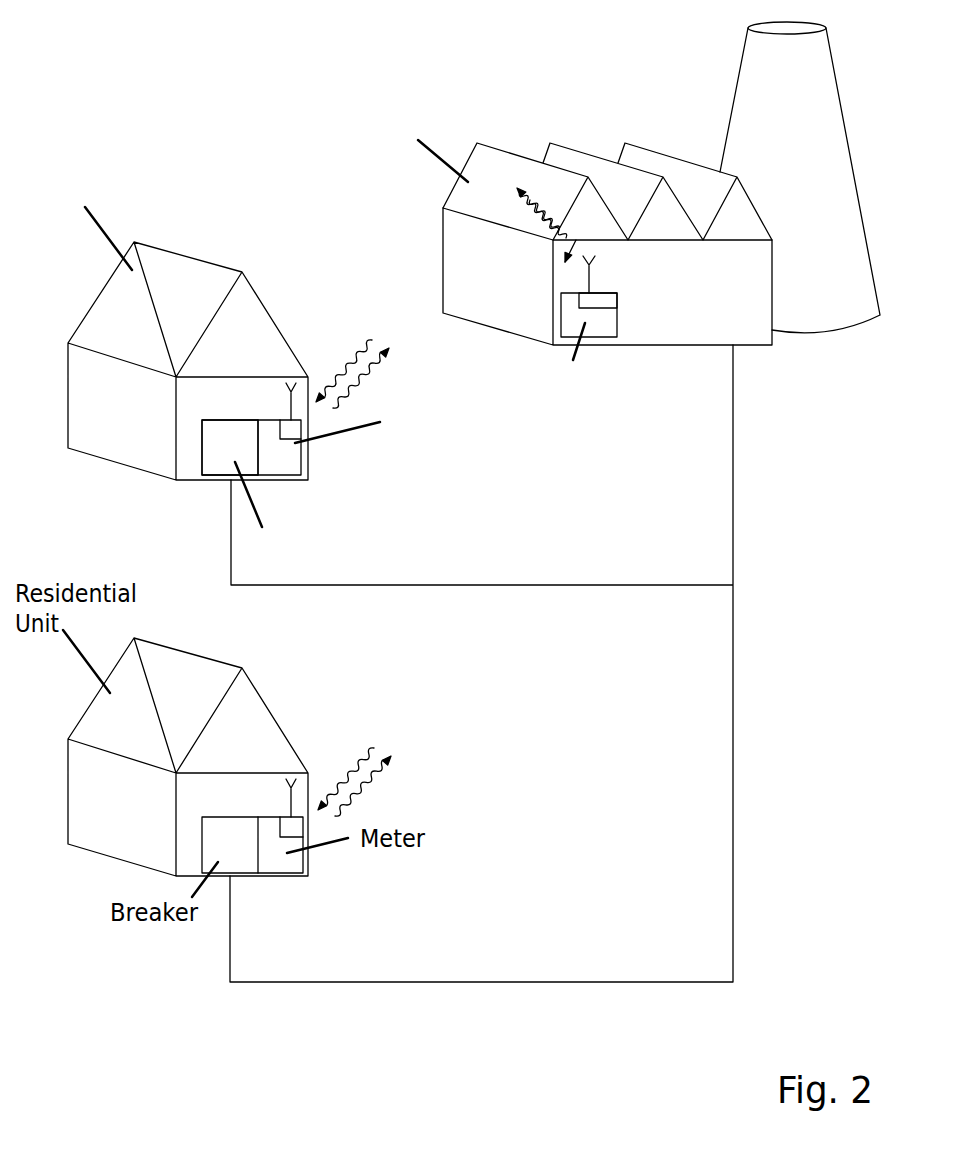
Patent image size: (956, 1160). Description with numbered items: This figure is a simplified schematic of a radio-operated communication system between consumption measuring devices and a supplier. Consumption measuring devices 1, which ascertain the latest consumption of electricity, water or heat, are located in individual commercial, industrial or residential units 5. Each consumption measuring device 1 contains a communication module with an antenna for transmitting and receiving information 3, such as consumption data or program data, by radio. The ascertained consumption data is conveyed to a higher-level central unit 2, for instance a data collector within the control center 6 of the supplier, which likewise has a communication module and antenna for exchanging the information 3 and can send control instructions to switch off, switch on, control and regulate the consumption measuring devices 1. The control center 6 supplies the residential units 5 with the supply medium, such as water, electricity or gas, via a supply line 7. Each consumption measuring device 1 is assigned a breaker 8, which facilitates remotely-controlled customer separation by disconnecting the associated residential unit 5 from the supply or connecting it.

The consumption measuring device 1 is at (305, 455).
The central unit 2 is at (598, 330).
The information 3 is at (446, 502).
The residential unit 5 is at (183, 252).
The control center 6 is at (502, 158).
The supply line 7 is at (737, 737).
The breaker 8 is at (215, 472).